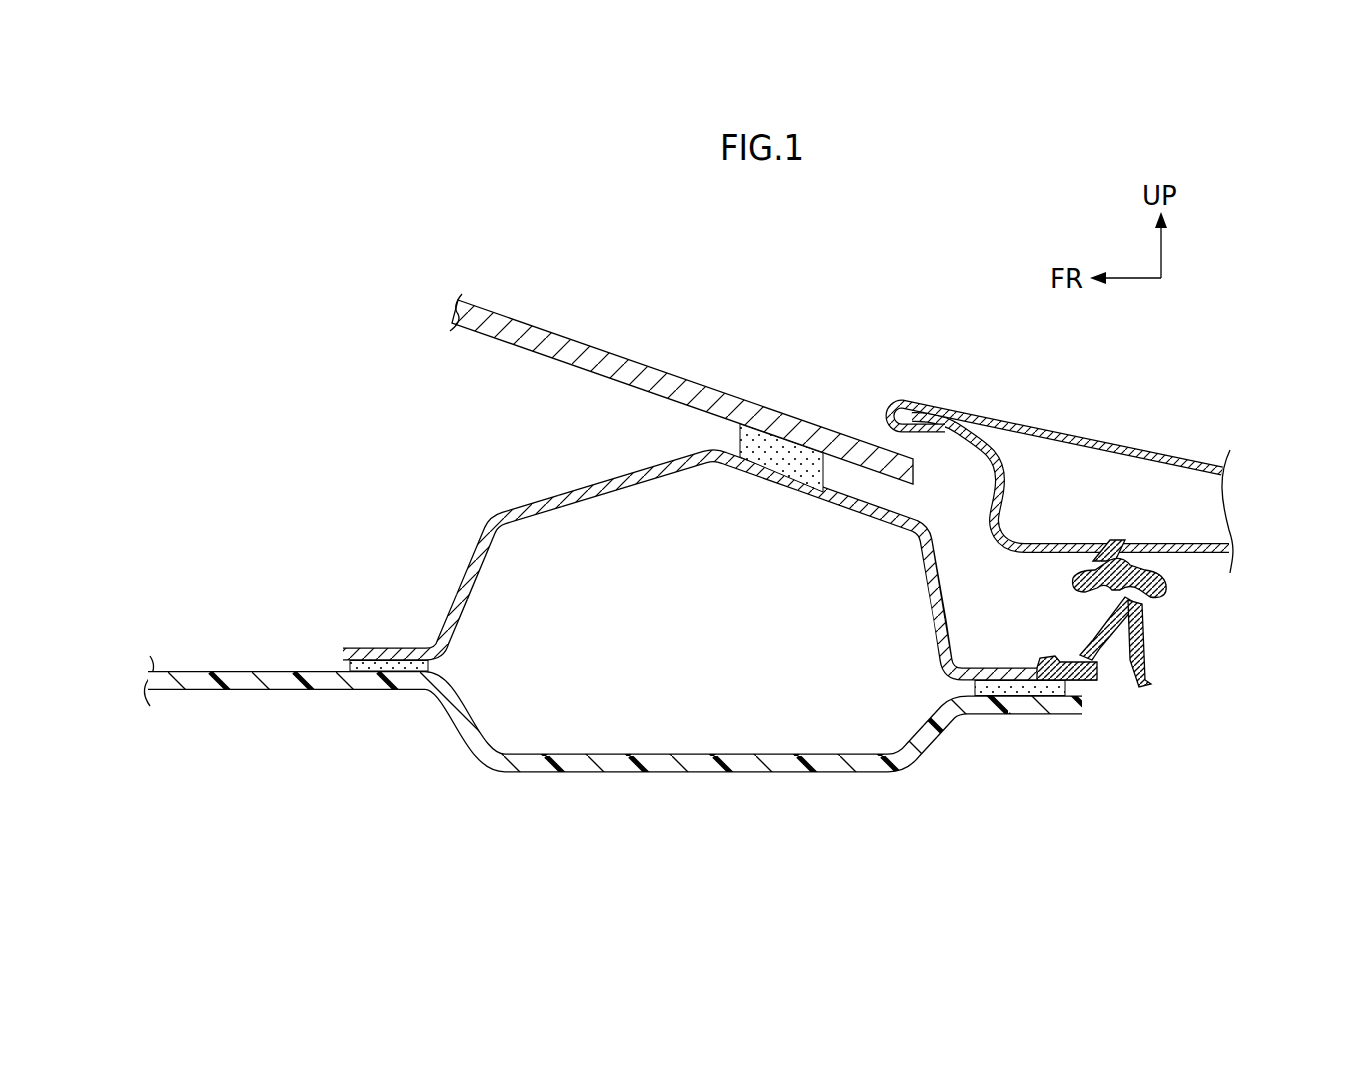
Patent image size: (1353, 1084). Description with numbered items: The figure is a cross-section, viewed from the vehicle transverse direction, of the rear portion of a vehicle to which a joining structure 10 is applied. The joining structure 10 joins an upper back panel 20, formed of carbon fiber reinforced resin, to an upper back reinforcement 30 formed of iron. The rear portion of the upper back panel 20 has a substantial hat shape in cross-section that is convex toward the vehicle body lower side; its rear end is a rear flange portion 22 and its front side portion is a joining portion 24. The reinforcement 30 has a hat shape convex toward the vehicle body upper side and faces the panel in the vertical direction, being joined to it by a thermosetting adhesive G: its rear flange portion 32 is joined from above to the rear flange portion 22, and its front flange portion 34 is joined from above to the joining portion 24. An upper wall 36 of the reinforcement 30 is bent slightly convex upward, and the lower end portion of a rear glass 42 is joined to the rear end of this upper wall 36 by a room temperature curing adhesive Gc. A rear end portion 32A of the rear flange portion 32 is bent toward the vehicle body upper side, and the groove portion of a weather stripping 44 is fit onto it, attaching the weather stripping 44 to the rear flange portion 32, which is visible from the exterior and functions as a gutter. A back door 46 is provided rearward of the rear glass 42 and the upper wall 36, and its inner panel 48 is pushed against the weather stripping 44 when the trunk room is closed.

The joining structure 10 is at (1122, 720).
The upper back panel 20 is at (197, 660).
The rear flange portion 22 is at (1073, 714).
The joining portion 24 is at (380, 691).
The upper back reinforcement 30 is at (475, 508).
The rear flange portion 32 is at (990, 667).
The rear end portion 32A is at (1137, 627).
The front flange portion 34 is at (381, 647).
The upper wall 36 is at (704, 468).
The rear glass 42 is at (585, 345).
The weather stripping 44 is at (1166, 590).
The back door 46 is at (1154, 441).
The inner panel 48 is at (1185, 544).
The thermosetting adhesive G is at (348, 664).
The room temperature curing adhesive Gc is at (745, 450).